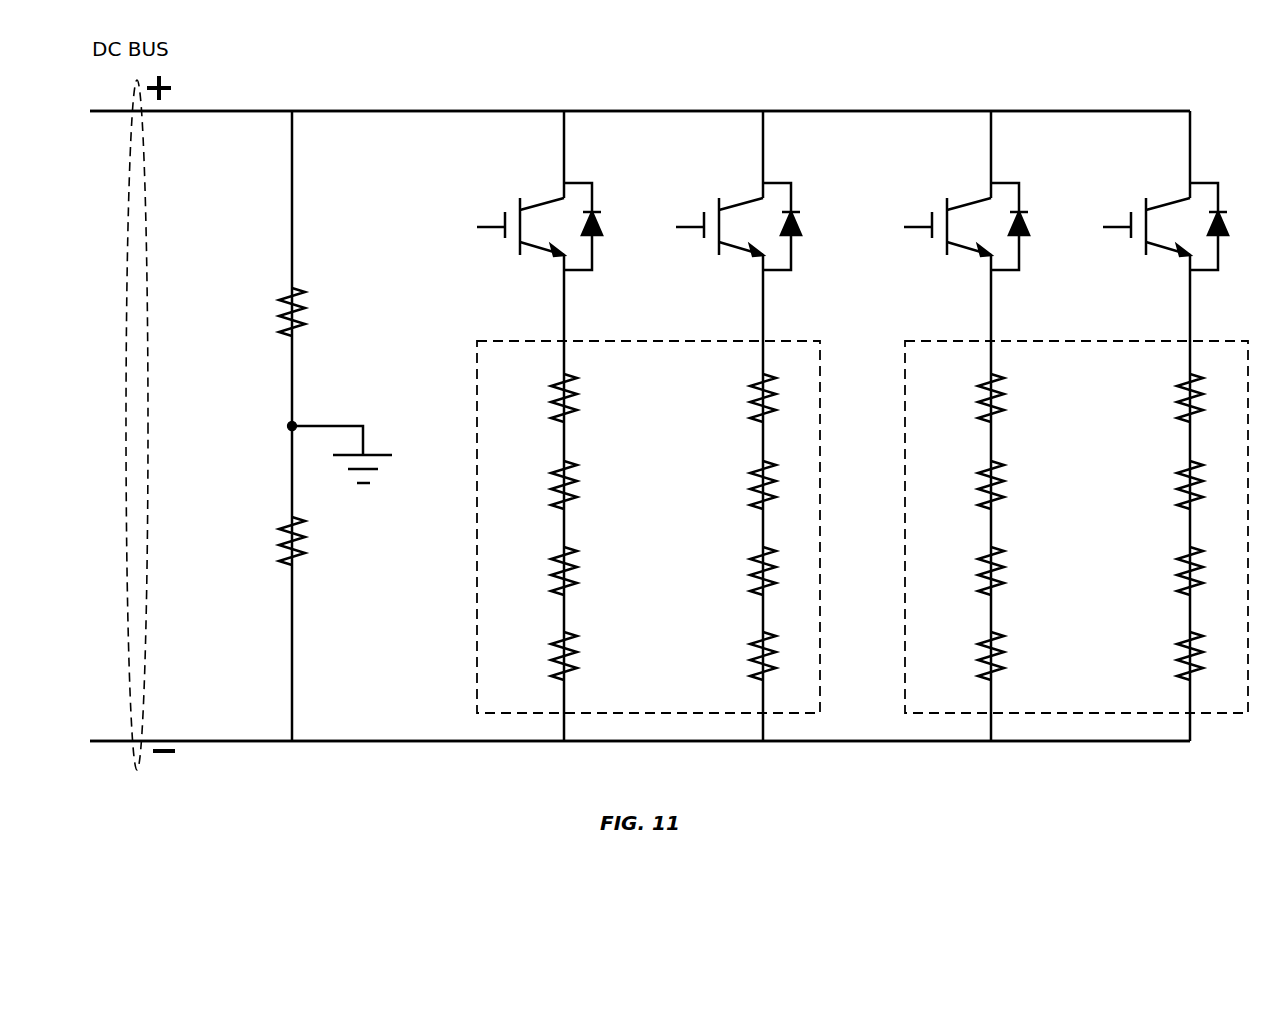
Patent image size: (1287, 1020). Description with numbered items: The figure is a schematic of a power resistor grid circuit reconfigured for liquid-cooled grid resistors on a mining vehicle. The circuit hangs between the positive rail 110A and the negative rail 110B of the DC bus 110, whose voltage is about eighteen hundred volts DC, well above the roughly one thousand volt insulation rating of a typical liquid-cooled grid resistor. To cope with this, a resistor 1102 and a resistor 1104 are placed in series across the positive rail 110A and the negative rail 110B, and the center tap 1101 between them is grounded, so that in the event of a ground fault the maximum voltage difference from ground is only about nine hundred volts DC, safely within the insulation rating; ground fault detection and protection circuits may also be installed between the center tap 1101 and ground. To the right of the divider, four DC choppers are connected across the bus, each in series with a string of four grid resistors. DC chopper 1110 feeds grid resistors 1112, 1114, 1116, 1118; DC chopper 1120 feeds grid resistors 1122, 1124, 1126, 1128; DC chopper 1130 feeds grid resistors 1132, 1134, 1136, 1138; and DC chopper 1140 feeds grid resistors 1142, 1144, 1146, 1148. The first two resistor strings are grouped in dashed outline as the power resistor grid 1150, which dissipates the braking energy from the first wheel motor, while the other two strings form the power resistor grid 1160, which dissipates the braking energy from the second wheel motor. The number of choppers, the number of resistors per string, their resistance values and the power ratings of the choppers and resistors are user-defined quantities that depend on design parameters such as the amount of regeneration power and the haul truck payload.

The DC bus 110 is at (132, 443).
The positive rail 110A is at (208, 111).
The negative rail 110B is at (211, 741).
The center tap 1101 is at (290, 424).
The resistor 1102 is at (260, 312).
The resistor 1104 is at (259, 541).
The DC chopper 1110 is at (502, 188).
The DC chopper 1120 is at (702, 188).
The DC chopper 1130 is at (930, 188).
The DC chopper 1140 is at (1130, 188).
The power resistor grid 1150 is at (645, 514).
The power resistor grid 1160 is at (1074, 514).
The grid resistor 1112 is at (535, 398).
The grid resistor 1114 is at (535, 485).
The grid resistor 1116 is at (535, 571).
The grid resistor 1118 is at (535, 656).
The grid resistor 1122 is at (734, 398).
The grid resistor 1124 is at (734, 485).
The grid resistor 1126 is at (734, 571).
The grid resistor 1128 is at (734, 656).
The grid resistor 1132 is at (962, 398).
The grid resistor 1134 is at (962, 485).
The grid resistor 1136 is at (962, 571).
The grid resistor 1138 is at (962, 656).
The grid resistor 1142 is at (1161, 398).
The grid resistor 1144 is at (1161, 485).
The grid resistor 1146 is at (1161, 571).
The grid resistor 1148 is at (1161, 656).